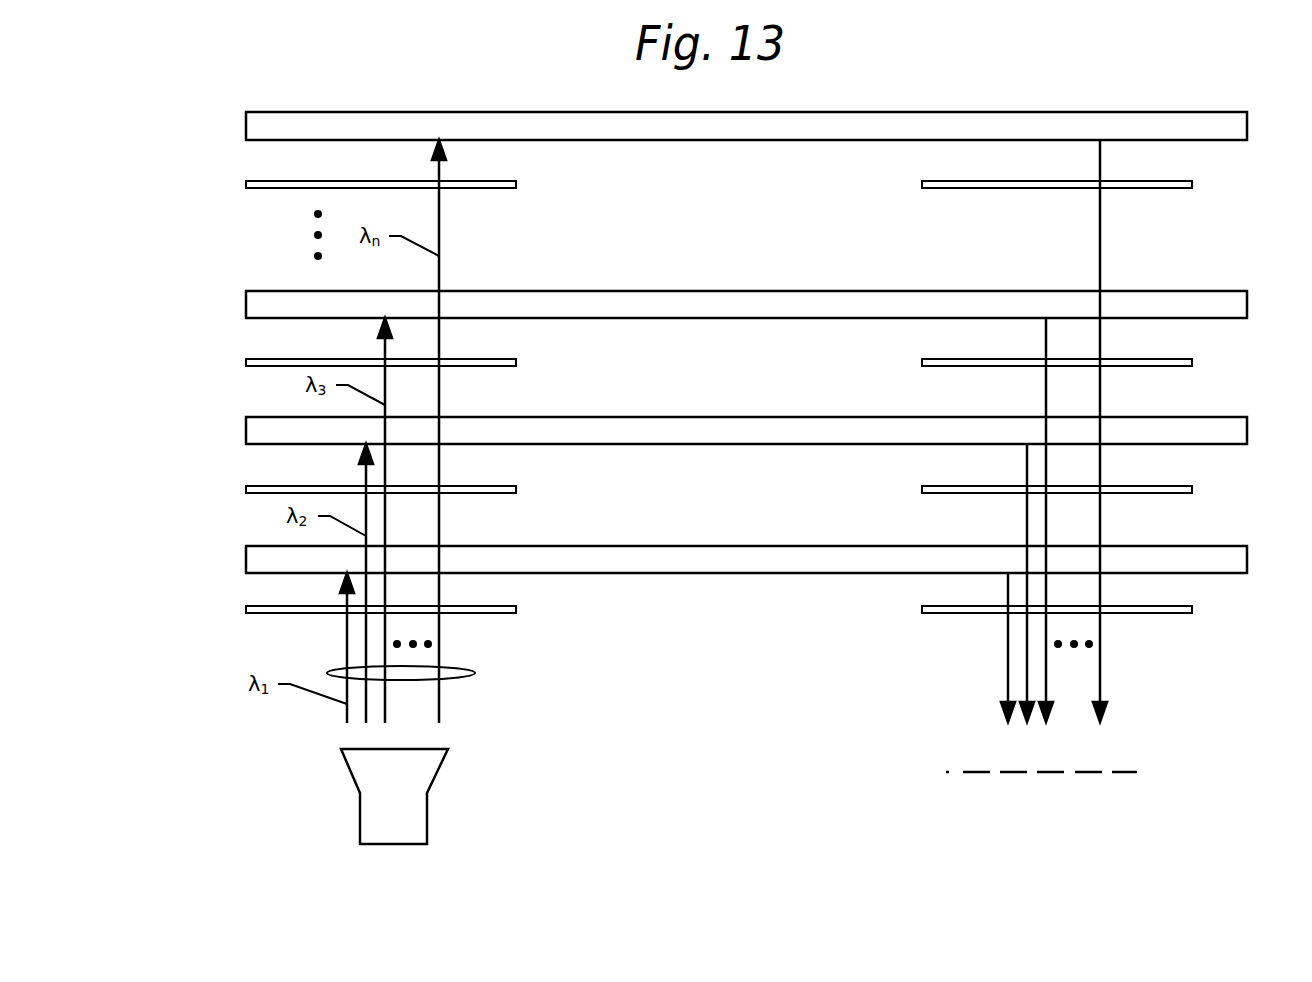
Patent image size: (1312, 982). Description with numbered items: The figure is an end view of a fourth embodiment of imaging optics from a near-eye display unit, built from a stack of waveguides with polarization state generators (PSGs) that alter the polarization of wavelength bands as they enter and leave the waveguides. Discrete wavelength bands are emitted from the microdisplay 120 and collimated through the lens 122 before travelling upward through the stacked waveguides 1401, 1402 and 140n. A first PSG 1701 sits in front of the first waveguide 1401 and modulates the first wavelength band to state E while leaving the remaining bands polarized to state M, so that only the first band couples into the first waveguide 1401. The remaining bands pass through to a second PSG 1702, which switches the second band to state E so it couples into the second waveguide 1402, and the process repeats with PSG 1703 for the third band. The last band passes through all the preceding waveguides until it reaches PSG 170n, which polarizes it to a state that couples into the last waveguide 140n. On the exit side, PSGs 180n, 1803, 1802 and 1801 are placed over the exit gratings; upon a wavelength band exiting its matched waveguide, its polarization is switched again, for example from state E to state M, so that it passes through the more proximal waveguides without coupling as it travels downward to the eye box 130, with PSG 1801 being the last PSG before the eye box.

The microdisplay 120 is at (427, 820).
The lens 122 is at (475, 673).
The eye box 130 is at (1115, 772).
The waveguide 140n is at (693, 140).
The waveguide 1402 is at (693, 318).
The waveguide 1401 is at (693, 573).
The polarization state generator 170n is at (246, 181).
The polarization state generator 1703 is at (246, 359).
The polarization state generator 1702 is at (246, 486).
The polarization state generator 1701 is at (246, 607).
The exit polarization state generator 180n is at (1192, 181).
The exit polarization state generator 1803 is at (1192, 359).
The exit polarization state generator 1802 is at (1192, 486).
The exit polarization state generator 1801 is at (1192, 606).